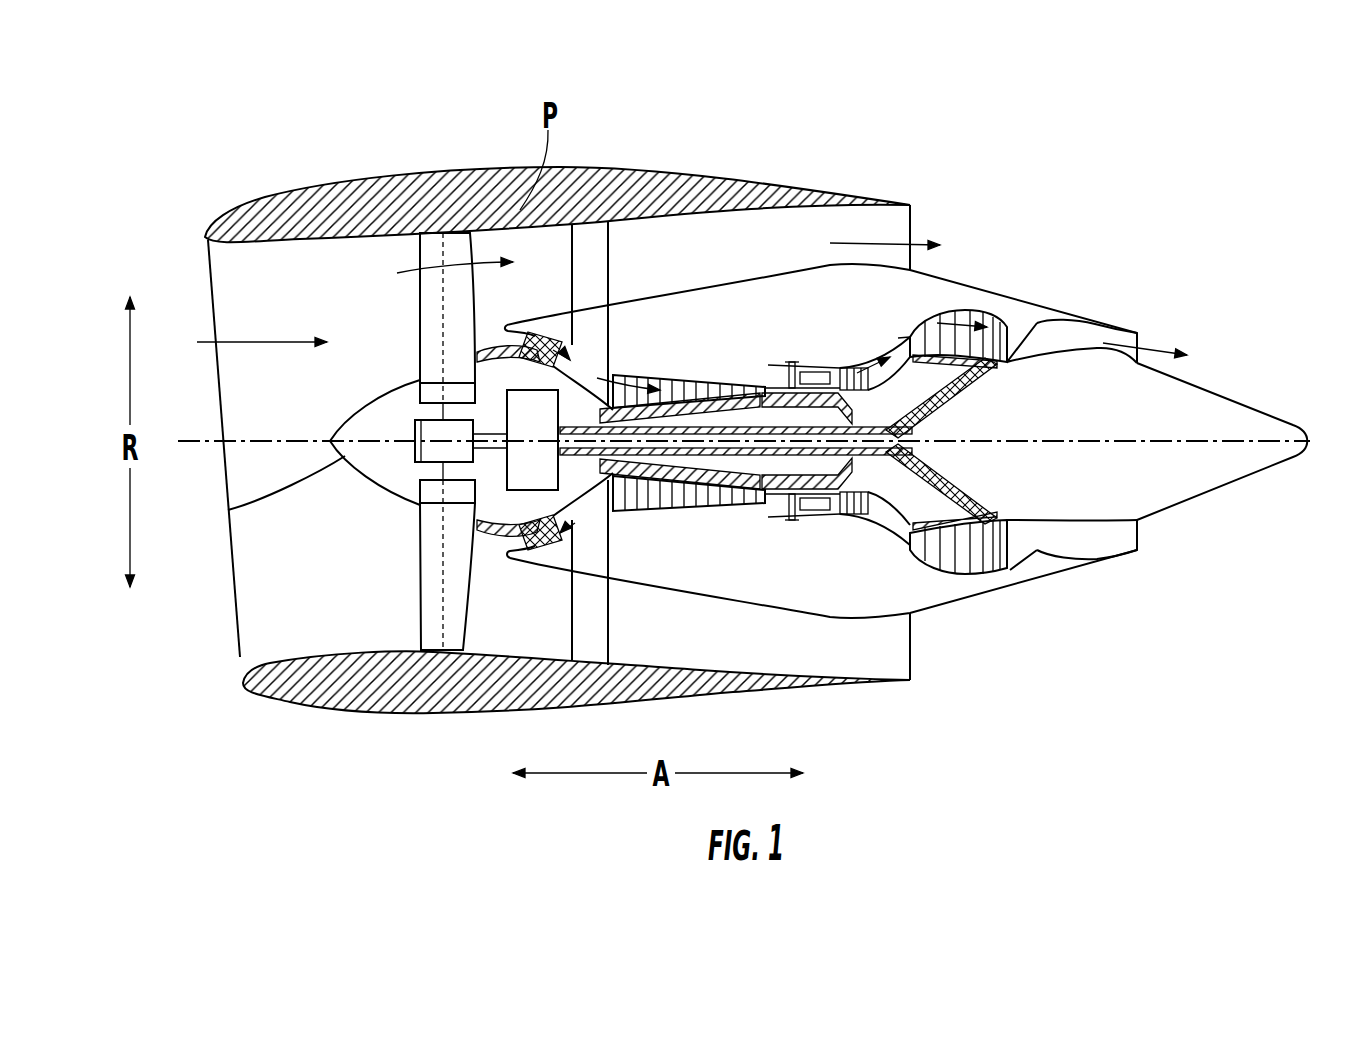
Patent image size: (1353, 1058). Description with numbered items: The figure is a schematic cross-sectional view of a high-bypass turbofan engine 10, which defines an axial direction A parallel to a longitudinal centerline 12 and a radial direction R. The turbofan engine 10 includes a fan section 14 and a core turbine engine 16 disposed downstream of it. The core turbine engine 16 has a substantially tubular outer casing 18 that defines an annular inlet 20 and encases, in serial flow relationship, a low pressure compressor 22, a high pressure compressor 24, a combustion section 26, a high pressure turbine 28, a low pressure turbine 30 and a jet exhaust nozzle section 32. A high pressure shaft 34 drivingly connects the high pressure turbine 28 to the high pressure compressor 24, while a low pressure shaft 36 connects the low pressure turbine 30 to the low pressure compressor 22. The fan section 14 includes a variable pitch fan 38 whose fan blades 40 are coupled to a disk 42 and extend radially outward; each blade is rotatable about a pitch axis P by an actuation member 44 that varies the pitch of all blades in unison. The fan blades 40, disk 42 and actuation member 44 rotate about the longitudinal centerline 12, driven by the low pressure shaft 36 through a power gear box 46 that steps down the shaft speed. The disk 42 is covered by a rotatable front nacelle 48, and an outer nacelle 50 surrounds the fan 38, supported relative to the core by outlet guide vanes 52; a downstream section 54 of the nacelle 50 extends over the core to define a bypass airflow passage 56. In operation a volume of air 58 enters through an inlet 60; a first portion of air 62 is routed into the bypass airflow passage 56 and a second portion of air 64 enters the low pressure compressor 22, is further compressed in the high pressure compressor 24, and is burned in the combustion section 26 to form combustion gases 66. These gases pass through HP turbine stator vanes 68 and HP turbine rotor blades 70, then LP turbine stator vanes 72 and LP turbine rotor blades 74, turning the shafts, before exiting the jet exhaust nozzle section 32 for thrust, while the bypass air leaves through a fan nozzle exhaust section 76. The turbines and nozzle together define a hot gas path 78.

The turbofan engine 10 is at (1053, 188).
The longitudinal centerline 12 is at (1078, 441).
The fan section 14 is at (455, 134).
The core turbine engine 16 is at (775, 325).
The outer casing 18 is at (767, 605).
The annular inlet 20 is at (512, 546).
The low pressure compressor 22 is at (610, 512).
The high pressure compressor 24 is at (639, 495).
The combustion section 26 is at (810, 503).
The high pressure turbine 28 is at (875, 513).
The low pressure turbine 30 is at (993, 567).
The jet exhaust nozzle section 32 is at (1053, 550).
The high pressure shaft 34 is at (843, 393).
The low pressure shaft 36 is at (917, 413).
The variable pitch fan 38 is at (383, 495).
The fan blades 40 is at (418, 592).
The disk 42 is at (430, 397).
The actuation member 44 is at (410, 427).
The power gear box 46 is at (563, 387).
The rotatable front nacelle 48 is at (230, 510).
The outer nacelle 50 is at (467, 717).
The outlet guide vanes 52 is at (608, 239).
The downstream section of the nacelle 54 is at (853, 195).
The bypass airflow passage 56 is at (705, 268).
The volume of air 58 is at (260, 340).
The inlet 60 is at (240, 658).
The first portion of air 62 is at (433, 268).
The second portion of air 64 is at (503, 333).
The combustion gases 66 is at (950, 322).
The HP turbine stator vanes 68 is at (830, 512).
The HP turbine rotor blades 70 is at (868, 490).
The LP turbine stator vanes 72 is at (913, 557).
The LP turbine rotor blades 74 is at (928, 557).
The fan nozzle exhaust section 76 is at (900, 228).
The hot gas path 78 is at (898, 338).